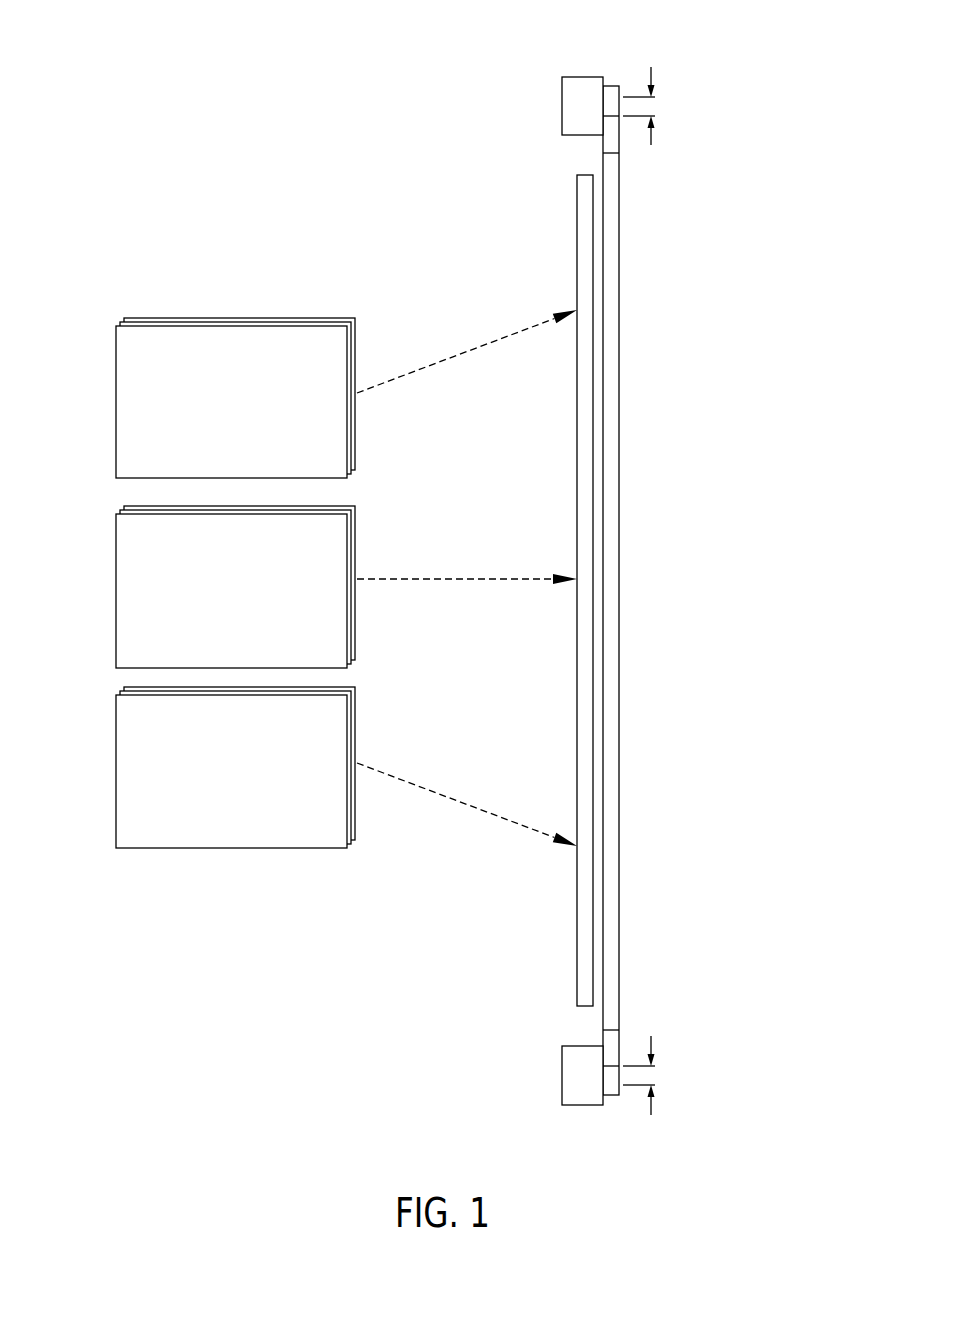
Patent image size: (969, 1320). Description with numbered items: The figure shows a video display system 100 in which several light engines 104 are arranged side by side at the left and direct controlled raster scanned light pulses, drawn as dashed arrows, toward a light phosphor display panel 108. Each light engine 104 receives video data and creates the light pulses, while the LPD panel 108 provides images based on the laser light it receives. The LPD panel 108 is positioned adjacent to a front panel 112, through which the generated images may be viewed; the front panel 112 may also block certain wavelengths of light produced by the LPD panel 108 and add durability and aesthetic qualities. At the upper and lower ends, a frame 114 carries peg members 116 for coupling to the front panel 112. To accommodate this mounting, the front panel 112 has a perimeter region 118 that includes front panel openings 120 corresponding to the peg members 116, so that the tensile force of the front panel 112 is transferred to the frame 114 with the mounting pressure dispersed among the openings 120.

The video display system 100 is at (119, 43).
The light engine 104 is at (255, 437).
The light phosphor display (LPD) panel 108 is at (577, 216).
The front panel 112 is at (619, 918).
The frame 114 is at (561, 91).
The peg member 116 is at (611, 100).
The perimeter region 118 is at (610, 137).
The front panel opening 120 is at (645, 593).